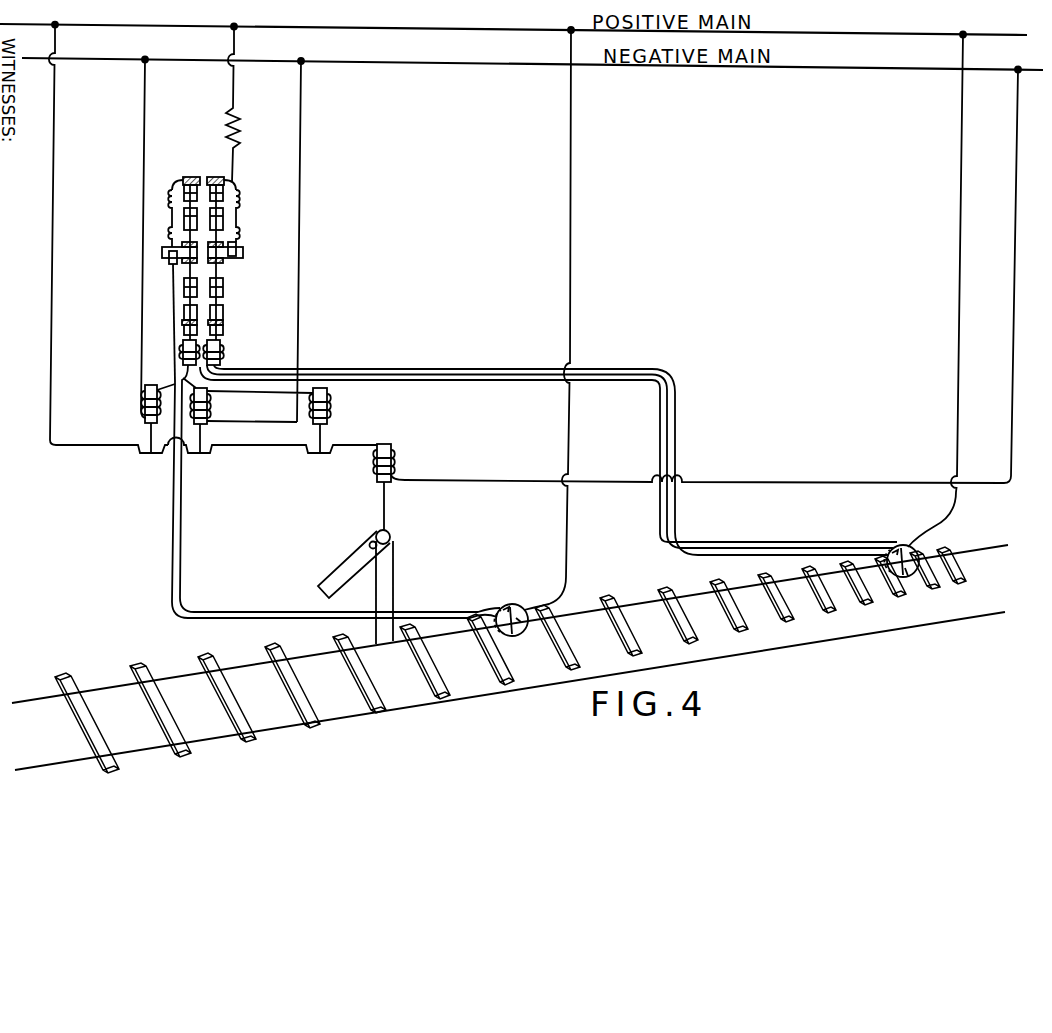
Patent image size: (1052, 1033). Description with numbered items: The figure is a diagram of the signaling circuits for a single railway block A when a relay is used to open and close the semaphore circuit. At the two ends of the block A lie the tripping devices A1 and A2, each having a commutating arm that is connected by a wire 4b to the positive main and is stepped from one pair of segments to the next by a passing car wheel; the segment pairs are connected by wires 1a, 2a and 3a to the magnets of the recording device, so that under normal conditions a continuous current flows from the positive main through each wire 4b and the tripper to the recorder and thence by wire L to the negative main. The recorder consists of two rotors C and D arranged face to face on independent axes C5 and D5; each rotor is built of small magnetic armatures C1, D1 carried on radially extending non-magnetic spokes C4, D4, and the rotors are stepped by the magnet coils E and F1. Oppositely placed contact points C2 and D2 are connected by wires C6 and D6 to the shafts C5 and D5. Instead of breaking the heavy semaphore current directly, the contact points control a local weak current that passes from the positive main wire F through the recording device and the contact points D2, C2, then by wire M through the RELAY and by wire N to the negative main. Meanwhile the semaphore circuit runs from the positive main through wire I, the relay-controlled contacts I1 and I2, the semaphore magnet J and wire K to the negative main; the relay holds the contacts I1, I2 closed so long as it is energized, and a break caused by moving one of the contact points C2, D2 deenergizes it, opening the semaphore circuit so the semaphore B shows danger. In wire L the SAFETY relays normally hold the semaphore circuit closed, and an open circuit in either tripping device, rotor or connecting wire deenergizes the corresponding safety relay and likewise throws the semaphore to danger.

The wire N is at (140, 140).
The wire I is at (52, 277).
The wire F is at (236, 103).
The wire L is at (302, 253).
The rotor C is at (170, 241).
The magnetic armatures C1 is at (178, 181).
The contact point C2 is at (184, 176).
The non-magnetic spokes C4 is at (188, 236).
The axis C5 is at (170, 262).
The wire C6 is at (172, 218).
The rotor D is at (241, 241).
The magnetic armatures D1 is at (237, 182).
The contact point D2 is at (213, 176).
The non-magnetic spokes D4 is at (219, 236).
The axis D5 is at (239, 258).
The wire D6 is at (240, 216).
The wire M is at (173, 309).
The magnet coil E is at (183, 349).
The magnet coil F1 is at (221, 348).
The relay RELAY is at (143, 415).
The relay-controlled contact I1 is at (112, 464).
The relay-controlled contact I2 is at (266, 461).
The safety relay SAFETY is at (302, 420).
The semaphore-actuating magnet J is at (395, 456).
The wire K is at (1016, 353).
The wire 4b is at (574, 306).
The semaphore B is at (355, 587).
The wire 1a is at (181, 551).
The wire 2a is at (183, 524).
The wire 3a is at (172, 570).
The block A is at (510, 659).
The tripping device A1 is at (523, 616).
The tripping device A2 is at (912, 563).